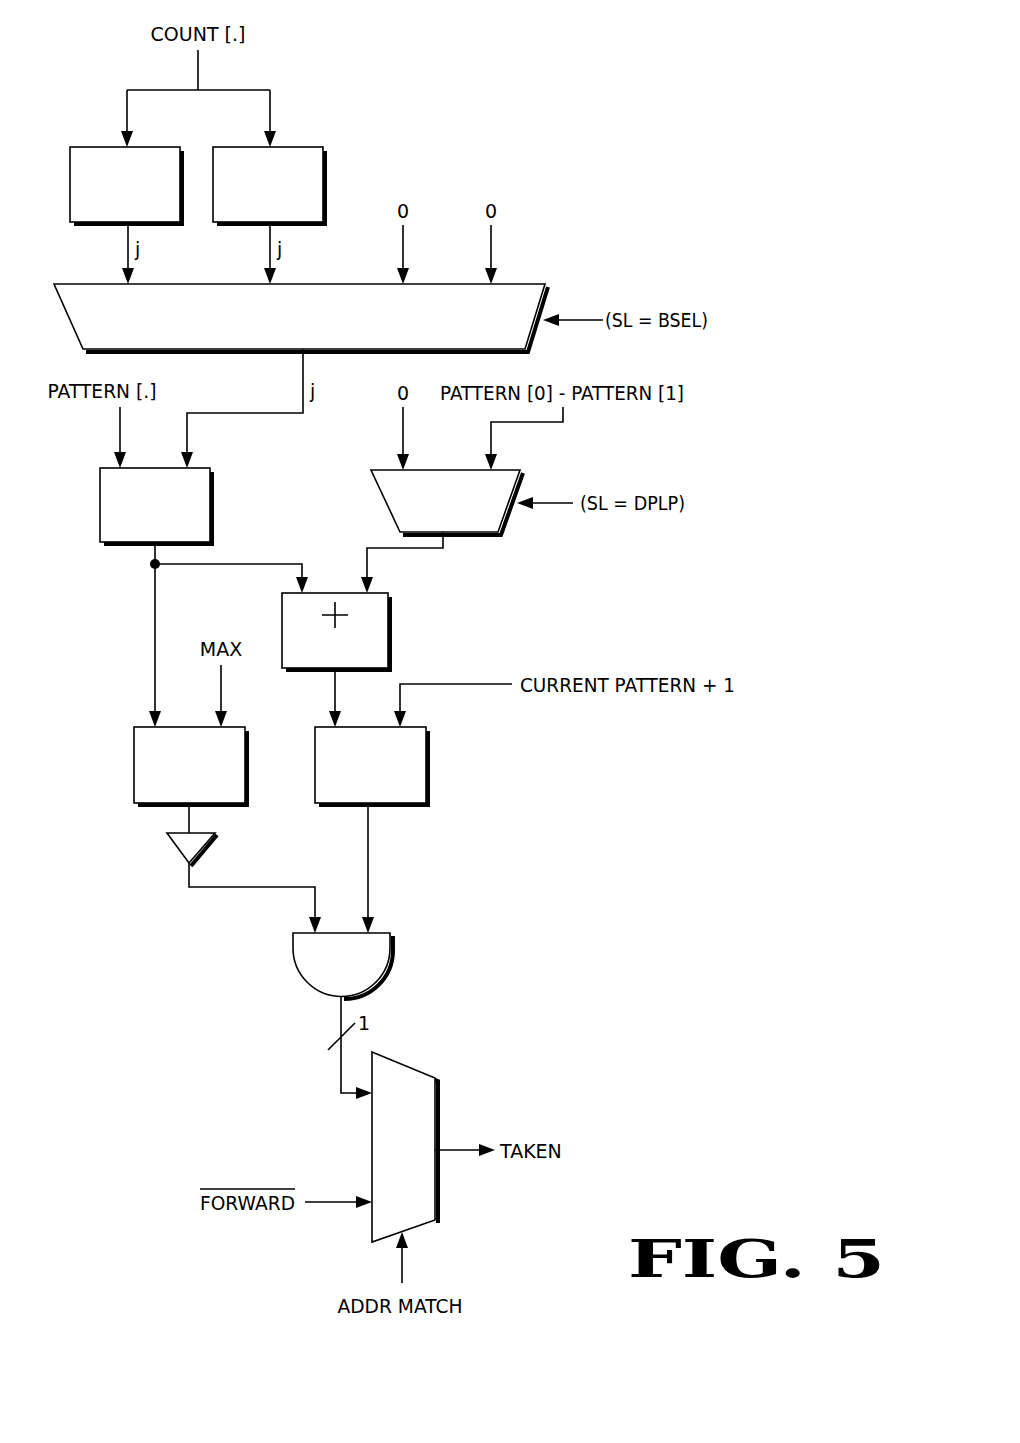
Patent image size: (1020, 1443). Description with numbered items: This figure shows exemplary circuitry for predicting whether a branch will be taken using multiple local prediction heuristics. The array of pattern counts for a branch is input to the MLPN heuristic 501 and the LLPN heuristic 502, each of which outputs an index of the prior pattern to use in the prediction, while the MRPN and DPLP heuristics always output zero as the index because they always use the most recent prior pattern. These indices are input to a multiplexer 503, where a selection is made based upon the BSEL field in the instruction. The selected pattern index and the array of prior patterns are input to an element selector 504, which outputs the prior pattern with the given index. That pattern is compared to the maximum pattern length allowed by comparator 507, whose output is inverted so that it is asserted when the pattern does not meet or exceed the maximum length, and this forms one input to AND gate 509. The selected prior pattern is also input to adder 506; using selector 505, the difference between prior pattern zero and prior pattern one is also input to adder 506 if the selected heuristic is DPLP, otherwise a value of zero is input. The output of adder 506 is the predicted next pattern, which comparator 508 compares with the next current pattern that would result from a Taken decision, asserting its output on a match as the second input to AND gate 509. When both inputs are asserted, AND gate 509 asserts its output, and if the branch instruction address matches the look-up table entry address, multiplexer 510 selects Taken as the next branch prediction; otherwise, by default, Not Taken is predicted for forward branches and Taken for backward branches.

The MLPN prediction heuristic 501 is at (137, 217).
The LLPN prediction heuristic 502 is at (280, 217).
The multiplexer 503 is at (480, 344).
The element selector 504 is at (164, 541).
The selector 505 is at (428, 529).
The adder 506 is at (344, 662).
The comparator 507 is at (197, 797).
The comparator 508 is at (379, 797).
The AND gate 509 is at (325, 994).
The multiplexer 510 is at (383, 1161).